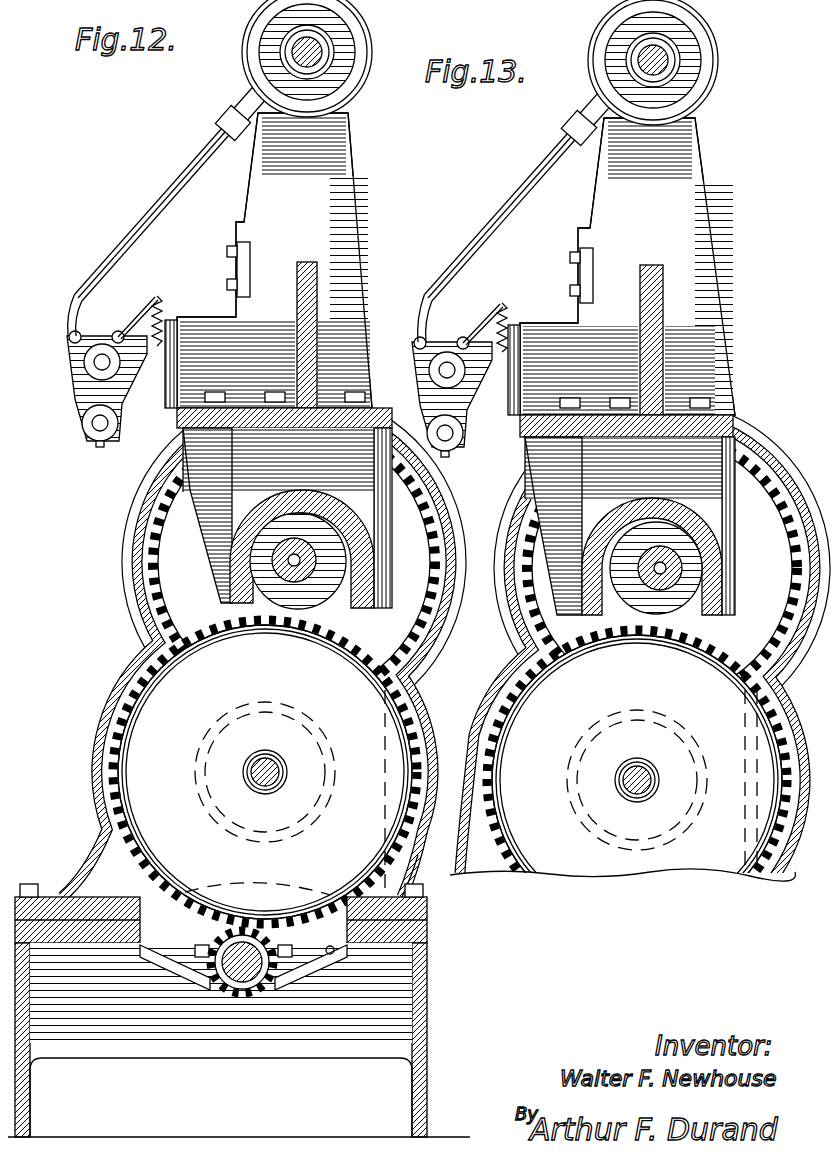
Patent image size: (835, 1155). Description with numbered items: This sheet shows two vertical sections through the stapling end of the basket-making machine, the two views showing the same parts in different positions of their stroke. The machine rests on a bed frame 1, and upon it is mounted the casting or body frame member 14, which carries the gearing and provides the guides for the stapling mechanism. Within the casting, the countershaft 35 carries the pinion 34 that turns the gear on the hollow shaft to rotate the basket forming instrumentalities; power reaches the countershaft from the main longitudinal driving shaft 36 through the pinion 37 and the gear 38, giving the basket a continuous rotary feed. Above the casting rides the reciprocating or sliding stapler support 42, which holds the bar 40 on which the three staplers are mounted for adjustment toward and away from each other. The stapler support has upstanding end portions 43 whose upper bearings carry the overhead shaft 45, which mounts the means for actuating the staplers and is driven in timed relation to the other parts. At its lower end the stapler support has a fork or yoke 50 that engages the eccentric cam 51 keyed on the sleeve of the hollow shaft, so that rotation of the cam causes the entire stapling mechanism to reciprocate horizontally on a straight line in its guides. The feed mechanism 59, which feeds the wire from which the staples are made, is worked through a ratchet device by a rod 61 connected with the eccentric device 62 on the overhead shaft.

In FIG. 12, the bed frame 1 is at (427, 990).
In FIG. 12, the casting or body frame member 14 is at (410, 852).
In FIG. 13, the casting or body frame member 14 is at (772, 870).
In FIG. 12, the pinion 34 is at (313, 722).
In FIG. 13, the pinion 34 is at (683, 725).
In FIG. 12, the countershaft 35 is at (258, 765).
In FIG. 13, the countershaft 35 is at (633, 770).
In FIG. 12, the main longitudinal driving shaft 36 is at (242, 980).
In FIG. 12, the pinion 37 is at (263, 985).
In FIG. 12, the gear 38 is at (410, 860).
In FIG. 13, the gear 38 is at (752, 845).
In FIG. 12, the bar 40 is at (238, 268).
In FIG. 13, the bar 40 is at (583, 275).
In FIG. 12, the stapler support 42 is at (300, 290).
In FIG. 13, the stapler support 42 is at (647, 295).
In FIG. 12, the upstanding end portions 43 is at (353, 220).
In FIG. 13, the upstanding end portions 43 is at (627, 266).
In FIG. 12, the overhead shaft 45 is at (330, 58).
In FIG. 13, the overhead shaft 45 is at (677, 63).
In FIG. 12, the fork or yoke 50 is at (238, 564).
In FIG. 13, the fork or yoke 50 is at (585, 578).
In FIG. 12, the eccentric cam 51 is at (285, 612).
In FIG. 13, the eccentric cam 51 is at (650, 614).
In FIG. 12, the feed mechanism 59 is at (97, 377).
In FIG. 13, the feed mechanism 59 is at (430, 367).
In FIG. 13, the rod 61 is at (500, 214).
In FIG. 12, the eccentric device 62 is at (262, 57).
In FIG. 13, the eccentric device 62 is at (607, 67).